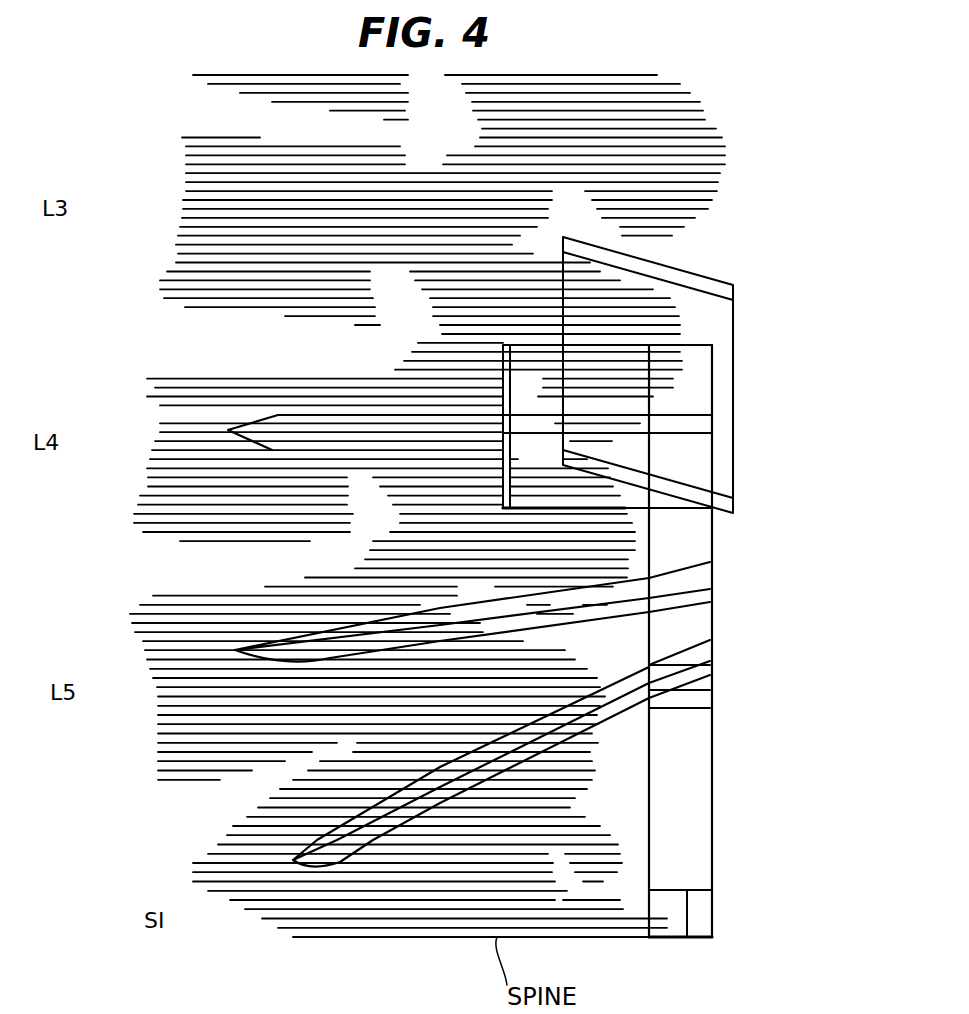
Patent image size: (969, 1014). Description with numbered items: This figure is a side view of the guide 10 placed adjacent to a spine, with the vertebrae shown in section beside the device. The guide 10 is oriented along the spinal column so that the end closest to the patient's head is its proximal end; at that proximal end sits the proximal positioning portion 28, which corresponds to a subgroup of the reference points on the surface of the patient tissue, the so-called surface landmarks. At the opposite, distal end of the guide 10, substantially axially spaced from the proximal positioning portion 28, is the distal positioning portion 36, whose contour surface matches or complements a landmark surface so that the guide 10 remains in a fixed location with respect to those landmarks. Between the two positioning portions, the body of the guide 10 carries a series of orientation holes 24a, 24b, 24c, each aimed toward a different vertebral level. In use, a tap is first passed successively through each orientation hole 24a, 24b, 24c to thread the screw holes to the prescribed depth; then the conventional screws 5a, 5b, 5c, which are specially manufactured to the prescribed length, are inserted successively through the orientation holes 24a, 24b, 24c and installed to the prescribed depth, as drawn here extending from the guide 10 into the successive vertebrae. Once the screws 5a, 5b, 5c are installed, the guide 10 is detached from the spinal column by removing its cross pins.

The guide 10 is at (757, 529).
The proximal positioning portion 28 is at (725, 402).
The orientation hole 24a is at (713, 446).
The orientation hole 24b is at (712, 597).
The orientation hole 24c is at (712, 683).
The distal positioning portion 36 is at (673, 937).
The screw 5a is at (228, 430).
The screw 5b is at (235, 650).
The screw 5c is at (293, 860).